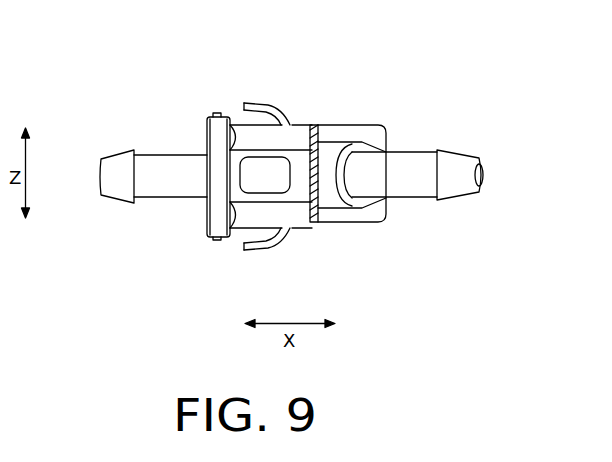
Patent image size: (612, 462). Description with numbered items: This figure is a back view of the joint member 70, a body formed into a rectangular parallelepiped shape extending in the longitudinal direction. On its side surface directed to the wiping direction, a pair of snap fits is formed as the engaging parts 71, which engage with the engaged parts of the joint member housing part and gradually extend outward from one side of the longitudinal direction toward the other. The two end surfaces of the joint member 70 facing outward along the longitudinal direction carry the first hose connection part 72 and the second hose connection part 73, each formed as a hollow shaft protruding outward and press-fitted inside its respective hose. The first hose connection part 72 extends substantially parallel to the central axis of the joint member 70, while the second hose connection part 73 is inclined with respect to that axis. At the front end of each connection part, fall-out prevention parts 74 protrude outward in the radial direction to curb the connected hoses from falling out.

The joint member 70 is at (311, 122).
The engaging parts 71 is at (270, 108).
The first hose connection part 72 is at (167, 165).
The second hose connection part 73 is at (405, 165).
The fall-out prevention parts 74 is at (117, 163).